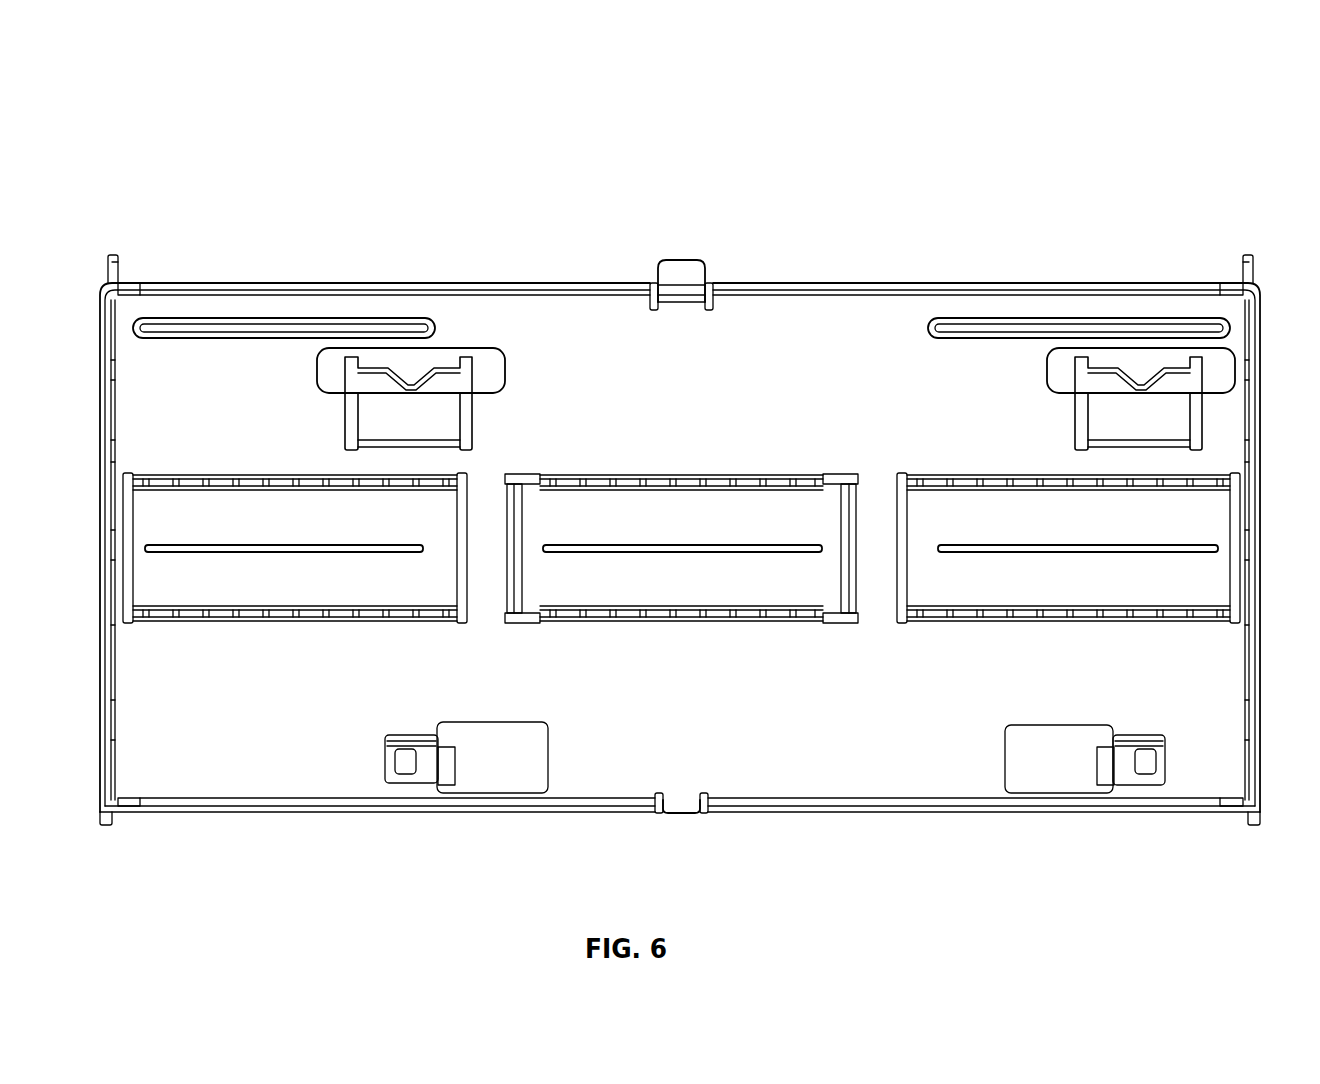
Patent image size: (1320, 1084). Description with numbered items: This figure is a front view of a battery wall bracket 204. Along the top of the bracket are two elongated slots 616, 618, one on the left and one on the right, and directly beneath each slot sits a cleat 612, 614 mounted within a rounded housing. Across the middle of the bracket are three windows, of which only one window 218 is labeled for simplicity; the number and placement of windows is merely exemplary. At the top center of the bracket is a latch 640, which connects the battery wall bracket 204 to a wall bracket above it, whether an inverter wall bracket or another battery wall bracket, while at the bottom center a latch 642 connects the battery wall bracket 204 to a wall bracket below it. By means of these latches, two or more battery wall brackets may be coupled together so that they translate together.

The battery wall bracket 204 is at (1205, 99).
The slot 616 is at (285, 318).
The slot 618 is at (960, 318).
The cleat 612 is at (430, 375).
The cleat 614 is at (1125, 405).
The latch 640 is at (677, 272).
The latch 642 is at (683, 800).
The window 218 is at (238, 570).